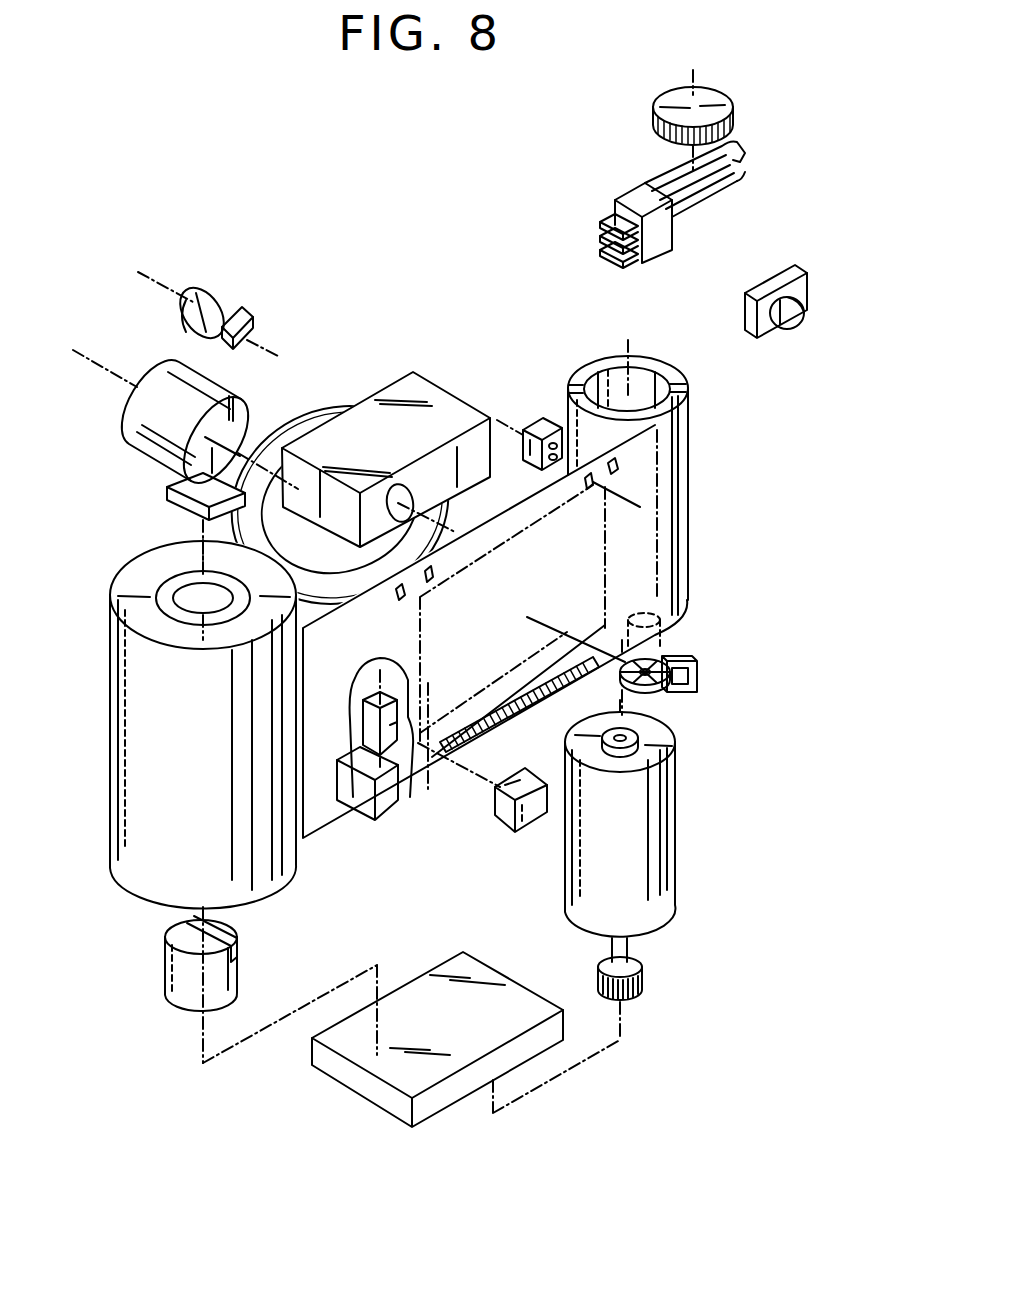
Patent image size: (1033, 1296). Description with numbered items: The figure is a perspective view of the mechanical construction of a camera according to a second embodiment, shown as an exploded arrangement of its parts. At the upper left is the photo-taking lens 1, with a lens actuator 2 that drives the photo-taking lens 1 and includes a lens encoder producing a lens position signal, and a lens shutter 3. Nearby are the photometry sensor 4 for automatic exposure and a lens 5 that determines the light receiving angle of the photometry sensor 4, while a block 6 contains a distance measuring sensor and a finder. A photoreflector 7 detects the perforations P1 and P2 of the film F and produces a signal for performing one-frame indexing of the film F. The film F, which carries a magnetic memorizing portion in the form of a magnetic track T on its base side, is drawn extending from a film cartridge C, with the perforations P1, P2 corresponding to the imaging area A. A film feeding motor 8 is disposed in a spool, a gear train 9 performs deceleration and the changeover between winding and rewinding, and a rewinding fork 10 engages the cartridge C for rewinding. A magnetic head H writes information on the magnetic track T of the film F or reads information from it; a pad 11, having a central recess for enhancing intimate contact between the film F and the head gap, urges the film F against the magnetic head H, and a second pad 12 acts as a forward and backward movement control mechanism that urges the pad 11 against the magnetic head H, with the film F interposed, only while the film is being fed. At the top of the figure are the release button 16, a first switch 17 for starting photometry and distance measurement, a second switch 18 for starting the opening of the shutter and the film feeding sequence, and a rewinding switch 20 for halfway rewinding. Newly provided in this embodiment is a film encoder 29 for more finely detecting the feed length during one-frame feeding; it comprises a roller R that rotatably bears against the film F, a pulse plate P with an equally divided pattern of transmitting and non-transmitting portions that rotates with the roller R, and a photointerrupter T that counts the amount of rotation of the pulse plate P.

The photo-taking lens 1 is at (132, 418).
The lens actuator 2 is at (163, 495).
The lens shutter 3 is at (303, 406).
The photometry sensor 4 is at (247, 328).
The lens 5 is at (217, 298).
The block 6 is at (437, 387).
The photoreflector 7 is at (527, 420).
The film feeding motor 8 is at (657, 863).
The gear train 9 is at (340, 1070).
The rewinding fork 10 is at (187, 970).
The pad 11 is at (410, 797).
The pad 12 is at (382, 820).
The release button 16 is at (725, 108).
The switch (SW1) 17 is at (742, 160).
The switch (SW2) 18 is at (740, 176).
The rewinding switch 20 is at (793, 322).
The film encoder 29 is at (708, 674).
The imaging area A is at (492, 688).
The film cartridge C is at (143, 740).
The film F is at (668, 550).
The magnetic head H is at (520, 820).
The pulse plate P is at (693, 698).
The perforation P1 is at (590, 490).
The perforation P2 is at (431, 585).
The roller R is at (662, 625).
The magnetic track / photointerrupter T is at (533, 697).